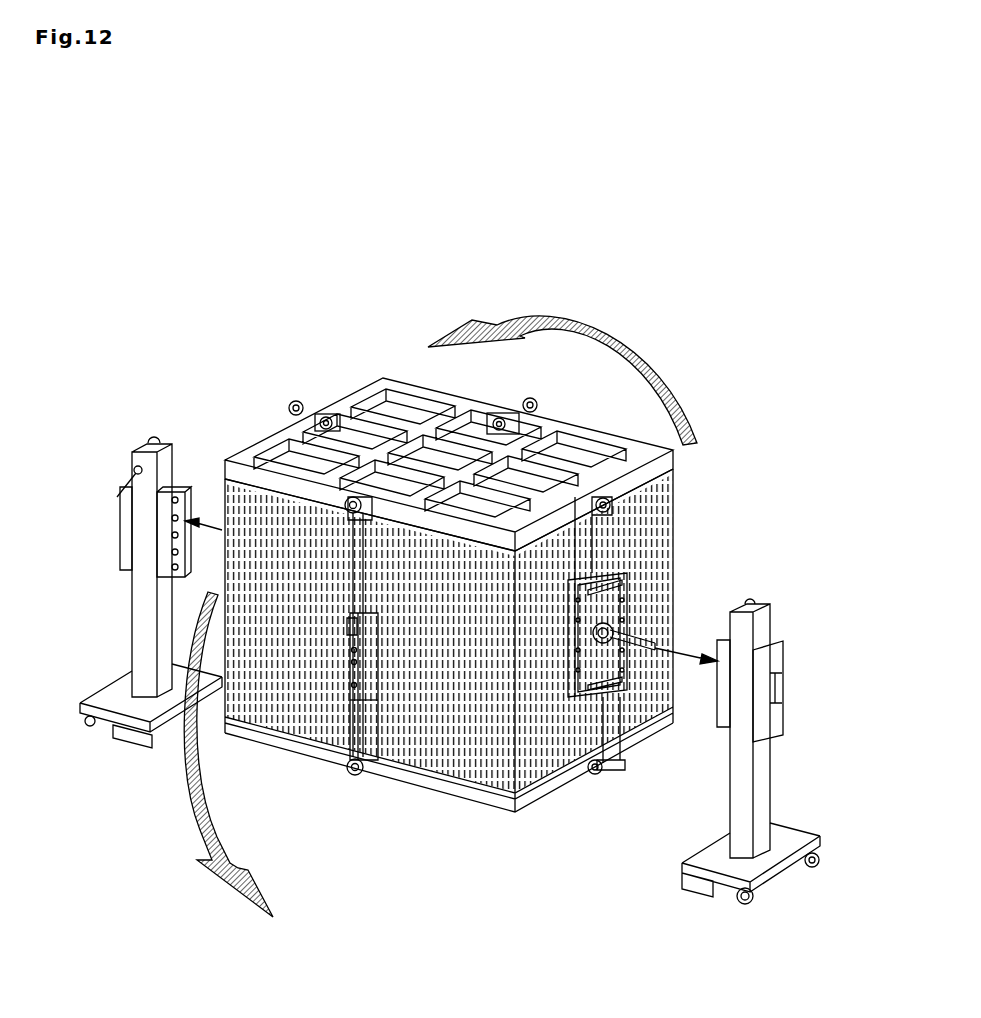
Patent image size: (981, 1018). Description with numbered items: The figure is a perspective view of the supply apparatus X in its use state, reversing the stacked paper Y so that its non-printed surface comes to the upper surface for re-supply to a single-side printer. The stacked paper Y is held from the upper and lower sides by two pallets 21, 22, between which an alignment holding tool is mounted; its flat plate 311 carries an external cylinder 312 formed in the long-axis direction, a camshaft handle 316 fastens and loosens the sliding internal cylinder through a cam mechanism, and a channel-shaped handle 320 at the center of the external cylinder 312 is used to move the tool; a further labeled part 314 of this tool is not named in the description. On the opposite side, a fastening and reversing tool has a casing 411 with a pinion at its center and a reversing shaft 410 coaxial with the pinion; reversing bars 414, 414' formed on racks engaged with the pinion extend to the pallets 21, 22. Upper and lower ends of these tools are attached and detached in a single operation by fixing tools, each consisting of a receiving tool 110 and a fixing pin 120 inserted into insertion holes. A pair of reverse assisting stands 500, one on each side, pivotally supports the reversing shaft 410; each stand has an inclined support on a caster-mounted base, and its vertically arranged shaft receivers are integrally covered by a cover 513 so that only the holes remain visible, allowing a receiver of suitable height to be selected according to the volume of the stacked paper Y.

The pallet 21 is at (373, 383).
The pallet 22 is at (247, 745).
The receiving tool 110 is at (326, 405).
The fixing pin 120 is at (348, 500).
The flat plate 311 is at (377, 707).
The external cylinder 312 is at (380, 737).
The clamp 314 is at (350, 690).
The camshaft handle 316 is at (375, 650).
The handle 320 is at (377, 690).
The reversing shaft 410 is at (662, 640).
The casing 411 is at (627, 600).
The reversing bar 414 is at (701, 560).
The reversing bar 414' is at (651, 766).
The reverse assisting stand 500 is at (118, 487).
The cover 513 is at (173, 485).
The supply apparatus X is at (633, 283).
The stacked paper Y is at (673, 480).